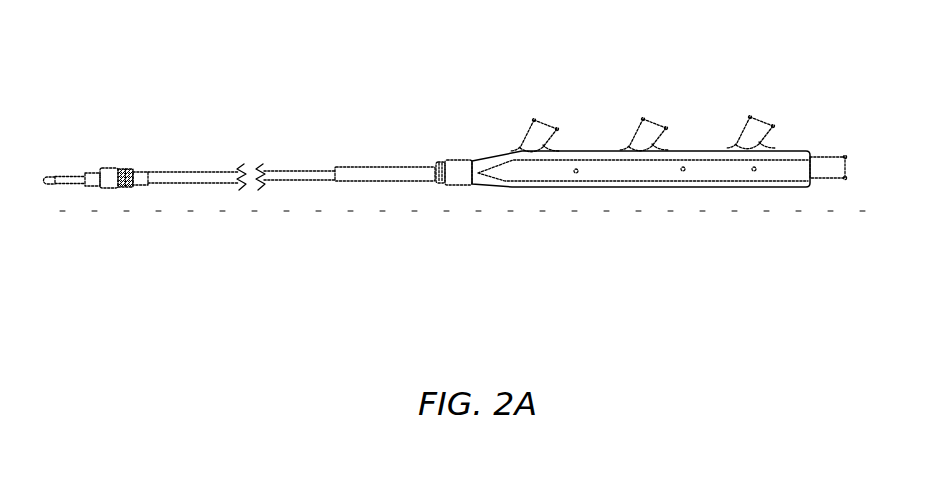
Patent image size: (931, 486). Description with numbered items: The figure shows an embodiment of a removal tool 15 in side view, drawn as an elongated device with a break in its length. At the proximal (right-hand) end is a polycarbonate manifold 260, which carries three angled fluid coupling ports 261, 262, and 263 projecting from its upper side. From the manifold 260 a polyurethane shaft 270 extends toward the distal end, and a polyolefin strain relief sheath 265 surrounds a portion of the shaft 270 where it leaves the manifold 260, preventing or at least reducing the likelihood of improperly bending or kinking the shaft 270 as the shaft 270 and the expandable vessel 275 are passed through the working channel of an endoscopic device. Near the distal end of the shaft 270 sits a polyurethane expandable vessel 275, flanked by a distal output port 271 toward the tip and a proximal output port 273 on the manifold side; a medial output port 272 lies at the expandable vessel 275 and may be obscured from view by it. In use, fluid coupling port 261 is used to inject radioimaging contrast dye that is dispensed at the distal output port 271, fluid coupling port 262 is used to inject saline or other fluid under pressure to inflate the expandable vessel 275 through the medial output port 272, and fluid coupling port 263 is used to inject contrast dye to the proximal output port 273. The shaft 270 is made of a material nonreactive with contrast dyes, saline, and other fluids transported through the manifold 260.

The removal tool 15 is at (116, 54).
The manifold 260 is at (657, 170).
The fluid coupling port 261 is at (550, 124).
The fluid coupling port 262 is at (656, 123).
The fluid coupling port 263 is at (764, 123).
The strain relief sheath 265 is at (425, 173).
The shaft 270 is at (308, 173).
The distal output port 271 is at (77, 177).
The medial output port 272 is at (127, 165).
The proximal output port 273 is at (147, 172).
The expandable vessel 275 is at (117, 188).